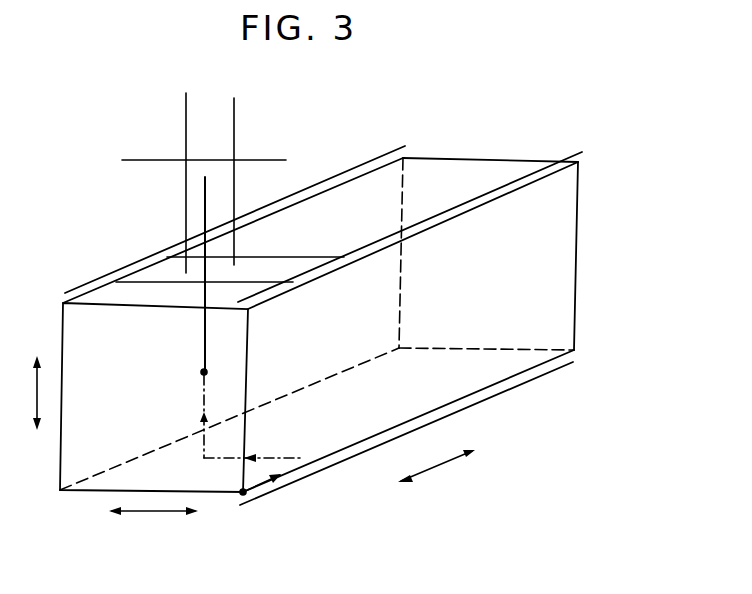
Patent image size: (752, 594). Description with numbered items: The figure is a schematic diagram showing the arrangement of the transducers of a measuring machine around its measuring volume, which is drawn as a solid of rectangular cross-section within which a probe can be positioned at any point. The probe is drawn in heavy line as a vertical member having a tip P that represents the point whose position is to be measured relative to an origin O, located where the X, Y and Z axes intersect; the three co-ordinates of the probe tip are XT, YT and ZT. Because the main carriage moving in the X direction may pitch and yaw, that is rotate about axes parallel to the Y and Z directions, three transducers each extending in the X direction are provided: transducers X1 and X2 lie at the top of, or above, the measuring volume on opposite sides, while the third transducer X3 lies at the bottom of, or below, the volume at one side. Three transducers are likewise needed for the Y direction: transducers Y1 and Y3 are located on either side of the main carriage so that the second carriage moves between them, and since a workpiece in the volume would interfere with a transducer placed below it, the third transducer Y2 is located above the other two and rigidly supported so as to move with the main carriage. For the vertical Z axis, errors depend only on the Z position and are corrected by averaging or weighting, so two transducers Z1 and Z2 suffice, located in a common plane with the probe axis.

The transducer X1 is at (425, 220).
The transducer X2 is at (244, 215).
The transducer X3 is at (420, 427).
The transducer Y1 is at (204, 273).
The transducer Y2 is at (216, 167).
The transducer Y3 is at (255, 244).
The transducer Z1 is at (192, 172).
The transducer Z2 is at (245, 169).
The probe tip P is at (192, 280).
The Z co-ordinate of the probe tip ZT is at (191, 416).
The Y co-ordinate of the probe tip YT is at (253, 448).
The X co-ordinate of the probe tip XT is at (262, 476).
The origin O is at (243, 494).
The X axis X is at (436, 471).
The Y axis Y is at (153, 523).
The Z axis Z is at (25, 393).